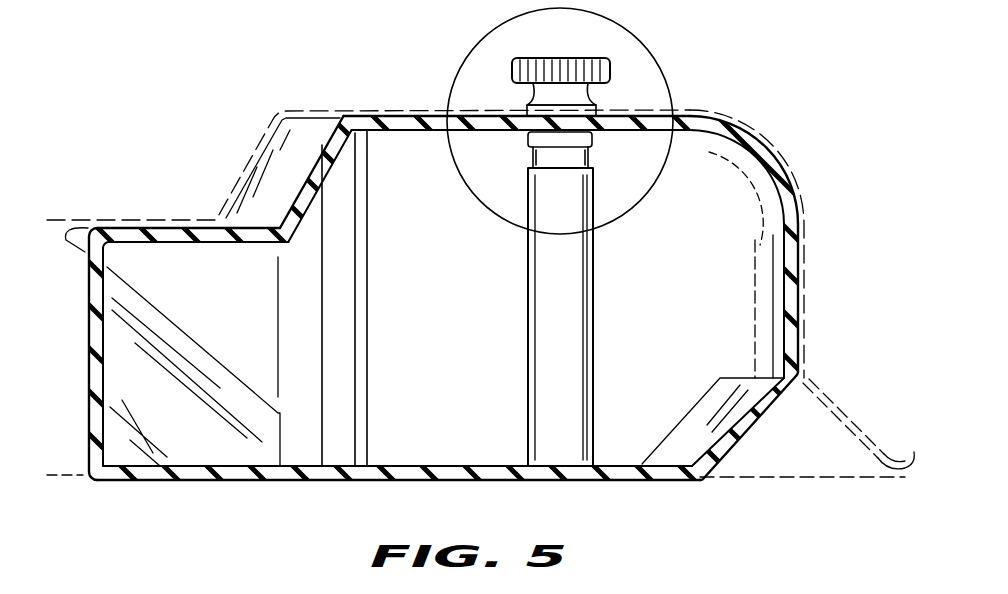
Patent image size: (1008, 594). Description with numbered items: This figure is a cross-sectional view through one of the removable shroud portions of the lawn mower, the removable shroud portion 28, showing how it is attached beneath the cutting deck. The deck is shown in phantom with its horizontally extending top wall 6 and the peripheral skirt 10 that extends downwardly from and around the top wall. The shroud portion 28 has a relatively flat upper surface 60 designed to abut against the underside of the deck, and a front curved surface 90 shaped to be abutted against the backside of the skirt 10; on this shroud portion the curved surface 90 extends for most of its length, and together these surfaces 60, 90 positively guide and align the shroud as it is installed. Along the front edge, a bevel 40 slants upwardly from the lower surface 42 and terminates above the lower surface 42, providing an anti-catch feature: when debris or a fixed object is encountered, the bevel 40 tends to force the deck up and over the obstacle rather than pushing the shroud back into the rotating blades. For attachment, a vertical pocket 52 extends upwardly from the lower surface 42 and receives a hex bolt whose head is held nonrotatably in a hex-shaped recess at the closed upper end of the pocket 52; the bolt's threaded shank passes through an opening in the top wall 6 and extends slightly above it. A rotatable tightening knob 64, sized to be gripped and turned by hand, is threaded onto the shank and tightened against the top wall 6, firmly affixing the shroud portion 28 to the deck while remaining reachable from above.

The top wall 6 is at (297, 112).
The peripheral skirt 10 is at (800, 335).
The removable shroud portion 28 is at (300, 174).
The bevel 40 is at (750, 432).
The lower surface 42 is at (490, 480).
The vertical pocket 52 is at (528, 303).
The upper surface 60 is at (388, 115).
The rotatable tightening knob 64 is at (583, 57).
The front curved surface 90 is at (795, 203).